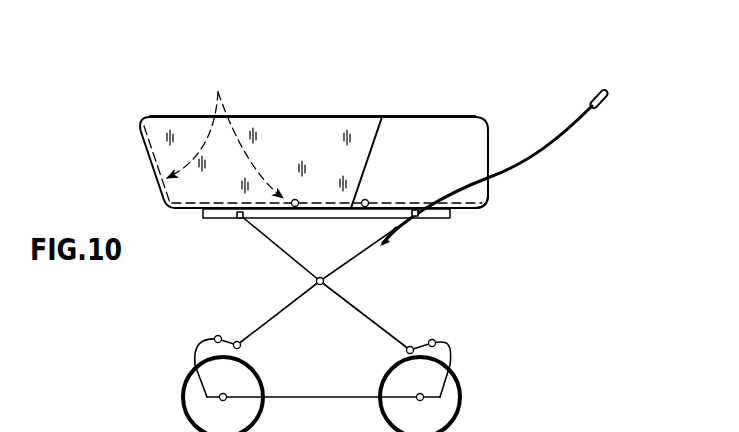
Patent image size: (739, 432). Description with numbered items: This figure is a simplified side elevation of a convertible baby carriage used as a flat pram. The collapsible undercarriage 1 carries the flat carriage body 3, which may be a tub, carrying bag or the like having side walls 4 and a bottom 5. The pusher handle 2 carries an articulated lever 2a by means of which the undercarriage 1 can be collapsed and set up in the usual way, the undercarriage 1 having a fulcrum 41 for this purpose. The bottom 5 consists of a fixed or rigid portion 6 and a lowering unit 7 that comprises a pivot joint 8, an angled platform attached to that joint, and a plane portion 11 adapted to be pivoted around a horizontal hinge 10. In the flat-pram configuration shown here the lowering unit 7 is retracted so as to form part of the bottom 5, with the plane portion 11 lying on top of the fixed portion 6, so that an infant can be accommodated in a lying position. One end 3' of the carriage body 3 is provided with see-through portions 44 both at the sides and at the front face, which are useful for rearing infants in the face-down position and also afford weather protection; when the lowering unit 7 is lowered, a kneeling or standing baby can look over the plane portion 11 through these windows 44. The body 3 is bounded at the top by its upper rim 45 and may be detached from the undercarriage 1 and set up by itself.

The undercarriage 1 is at (455, 302).
The pusher handle 2 is at (565, 138).
The articulated lever 2a is at (402, 223).
The carriage body 3 is at (314, 110).
The end of carriage body 3' is at (265, 154).
The side walls 4 is at (473, 133).
The bottom 5 is at (259, 245).
The fixed portion 6 is at (465, 210).
The lowering unit 7 is at (218, 92).
The pivot joint 8 is at (295, 207).
The horizontal hinge 10 is at (364, 207).
The plane portion 11 is at (447, 203).
The fulcrum 41 is at (321, 285).
The see-through portions 44 is at (192, 128).
The upper rim 45 is at (287, 113).